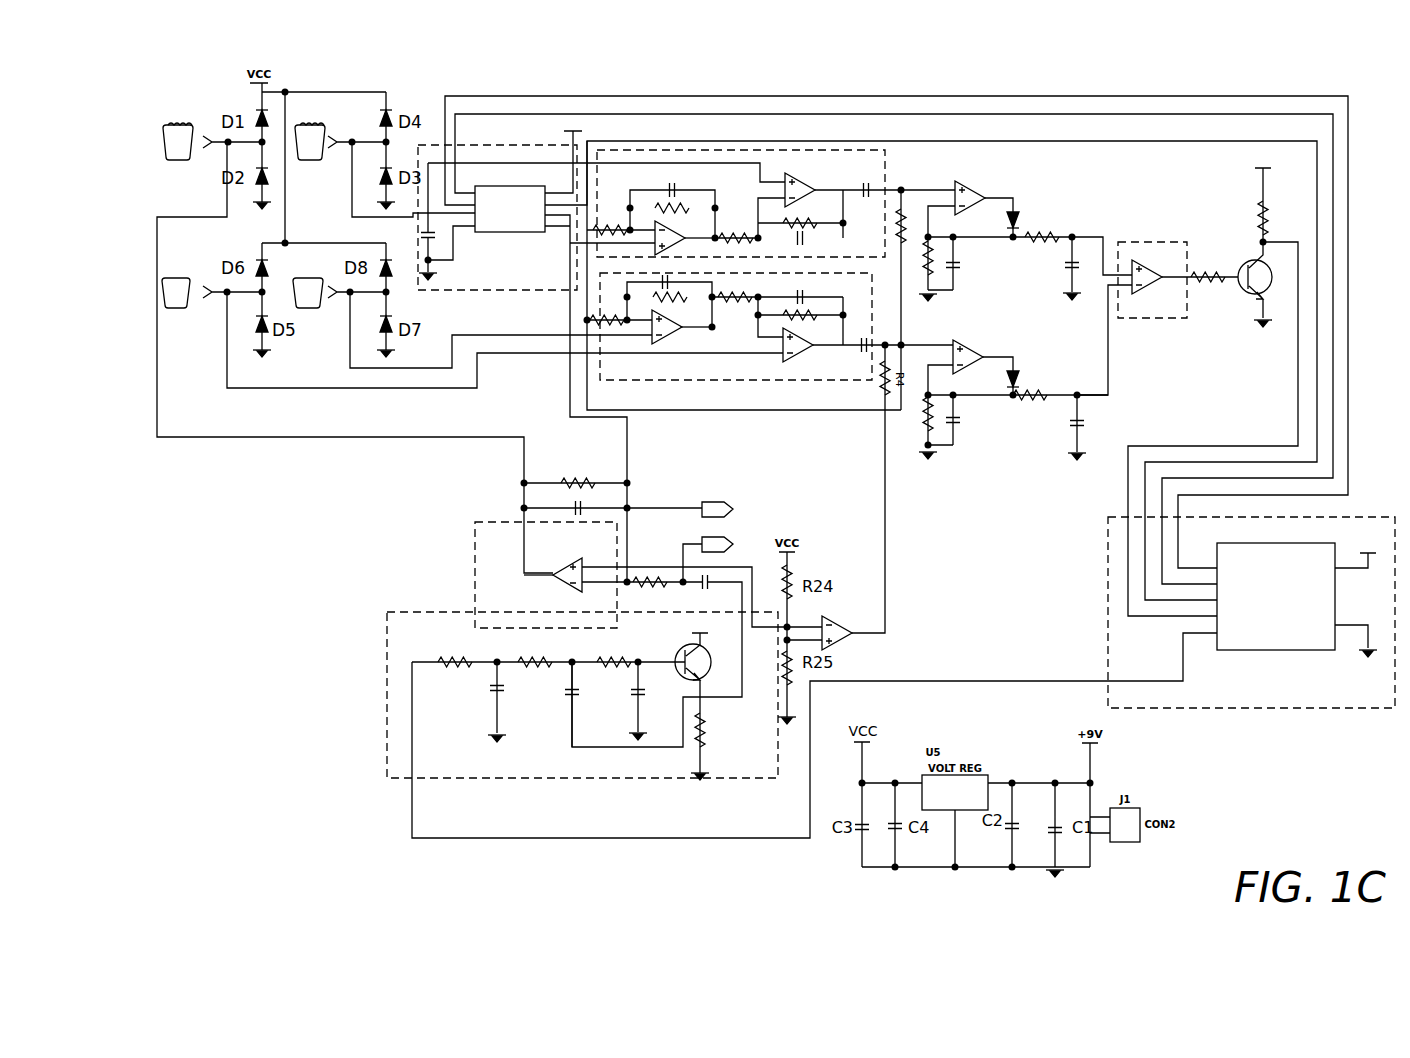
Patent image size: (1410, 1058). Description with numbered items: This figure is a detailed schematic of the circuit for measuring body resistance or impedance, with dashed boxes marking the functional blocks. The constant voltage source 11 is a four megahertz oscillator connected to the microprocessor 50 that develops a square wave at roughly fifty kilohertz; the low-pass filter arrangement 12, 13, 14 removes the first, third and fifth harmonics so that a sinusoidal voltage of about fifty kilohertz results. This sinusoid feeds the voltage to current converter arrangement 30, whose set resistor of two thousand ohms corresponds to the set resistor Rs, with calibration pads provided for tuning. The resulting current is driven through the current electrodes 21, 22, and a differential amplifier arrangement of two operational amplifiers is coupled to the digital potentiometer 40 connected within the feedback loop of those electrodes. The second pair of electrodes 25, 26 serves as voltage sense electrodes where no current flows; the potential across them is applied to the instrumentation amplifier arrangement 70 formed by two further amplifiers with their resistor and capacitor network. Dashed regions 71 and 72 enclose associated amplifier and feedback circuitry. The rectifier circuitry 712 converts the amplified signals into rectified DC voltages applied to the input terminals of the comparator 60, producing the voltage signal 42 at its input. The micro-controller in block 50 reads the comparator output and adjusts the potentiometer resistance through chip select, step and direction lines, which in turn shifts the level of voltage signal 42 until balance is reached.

The constant voltage source 11 is at (534, 696).
The low-pass filter arrangement 12 is at (488, 678).
The low-pass filter arrangement 13 is at (562, 678).
The low-pass filter arrangement 14 is at (628, 677).
The current electrode 21 is at (176, 122).
The current electrode 22 is at (313, 122).
The voltage sense electrode 25 is at (175, 310).
The voltage sense electrode 26 is at (306, 310).
The voltage to current converter arrangement 30 is at (475, 555).
The digital potentiometer 40 is at (493, 140).
The voltage signal 42 is at (1116, 243).
The microprocessor 50 is at (1108, 606).
The comparator 60 is at (1157, 237).
The instrumentation amplifier arrangement 70 is at (716, 383).
The first filter stage 71 is at (890, 175).
The comparator reference input 72 is at (1108, 292).
The rectifier circuitry 712 is at (1023, 188).